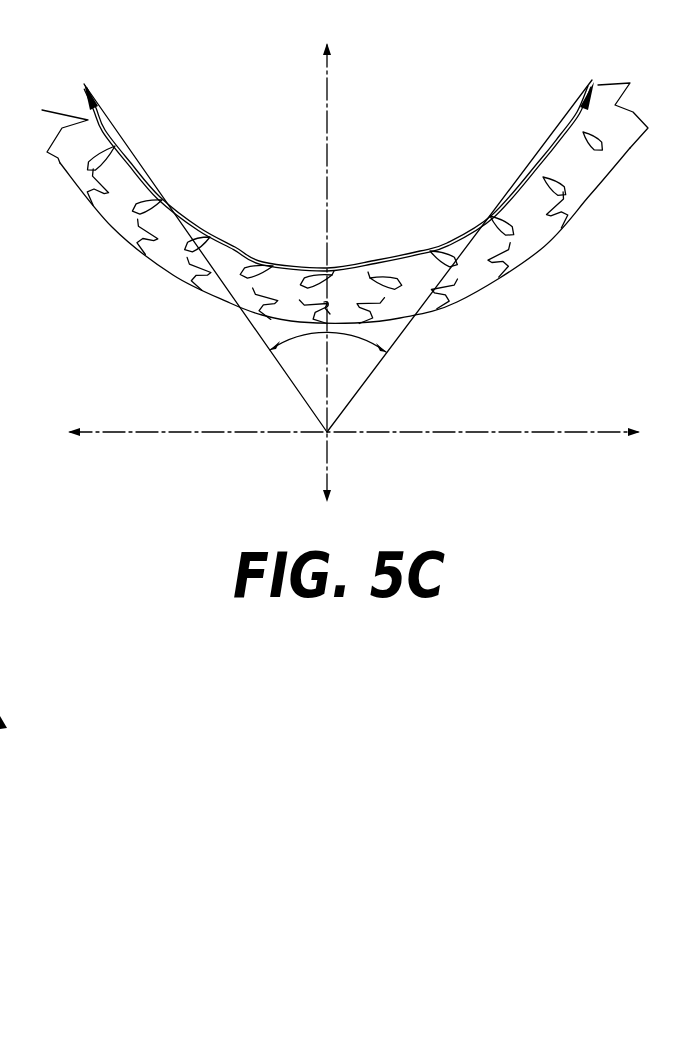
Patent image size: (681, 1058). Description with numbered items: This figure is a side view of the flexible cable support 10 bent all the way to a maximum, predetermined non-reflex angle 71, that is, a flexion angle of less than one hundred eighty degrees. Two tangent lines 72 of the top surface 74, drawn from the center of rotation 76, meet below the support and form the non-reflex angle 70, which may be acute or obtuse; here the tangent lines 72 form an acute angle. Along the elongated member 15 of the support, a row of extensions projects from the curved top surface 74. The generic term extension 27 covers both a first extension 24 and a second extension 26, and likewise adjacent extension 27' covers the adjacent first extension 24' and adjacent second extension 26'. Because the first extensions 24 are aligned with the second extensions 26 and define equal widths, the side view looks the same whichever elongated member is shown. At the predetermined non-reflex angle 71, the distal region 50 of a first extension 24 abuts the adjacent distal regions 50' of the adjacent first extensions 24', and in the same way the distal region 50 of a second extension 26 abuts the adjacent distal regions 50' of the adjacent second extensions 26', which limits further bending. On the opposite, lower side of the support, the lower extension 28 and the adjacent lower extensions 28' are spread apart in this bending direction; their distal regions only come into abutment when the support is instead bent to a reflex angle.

The flexible cable support 10 is at (361, 229).
The elongated member 15 is at (490, 250).
The first extension 24 is at (346, 202).
The second extension 26 is at (385, 280).
The adjacent first extension 24' is at (351, 205).
The adjacent second extension 26' is at (443, 259).
The extension 27 is at (327, 256).
The adjacent extension 27' is at (327, 229).
The lower extension 28 is at (328, 346).
The adjacent lower extension 28' is at (341, 327).
The distal region 50 is at (372, 262).
The adjacent distal region 50' is at (345, 200).
The non-reflex angle 70 is at (365, 340).
The predetermined non-reflex angle 71 is at (459, 256).
The tangent line 72 is at (138, 163).
The top surface 74 is at (163, 198).
The center of rotation 76 is at (327, 433).